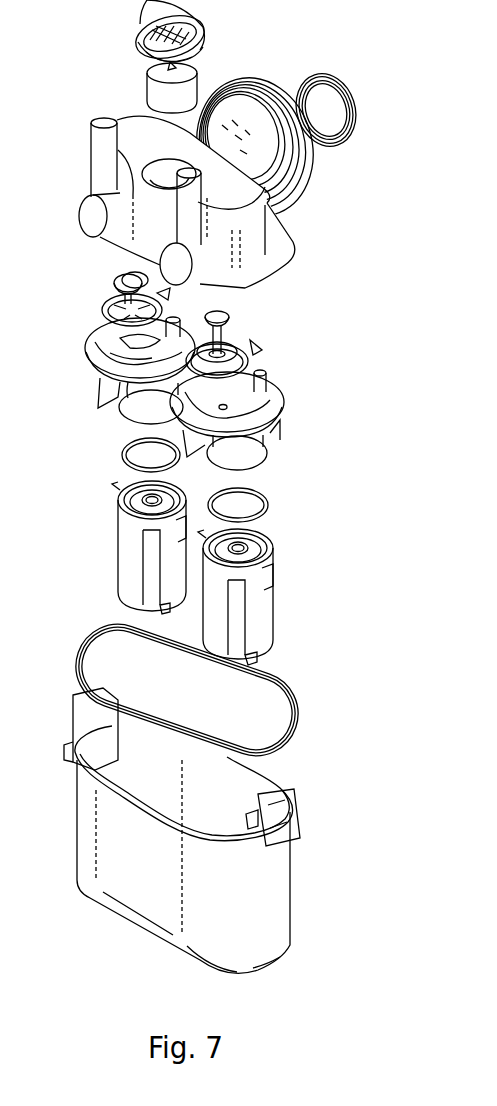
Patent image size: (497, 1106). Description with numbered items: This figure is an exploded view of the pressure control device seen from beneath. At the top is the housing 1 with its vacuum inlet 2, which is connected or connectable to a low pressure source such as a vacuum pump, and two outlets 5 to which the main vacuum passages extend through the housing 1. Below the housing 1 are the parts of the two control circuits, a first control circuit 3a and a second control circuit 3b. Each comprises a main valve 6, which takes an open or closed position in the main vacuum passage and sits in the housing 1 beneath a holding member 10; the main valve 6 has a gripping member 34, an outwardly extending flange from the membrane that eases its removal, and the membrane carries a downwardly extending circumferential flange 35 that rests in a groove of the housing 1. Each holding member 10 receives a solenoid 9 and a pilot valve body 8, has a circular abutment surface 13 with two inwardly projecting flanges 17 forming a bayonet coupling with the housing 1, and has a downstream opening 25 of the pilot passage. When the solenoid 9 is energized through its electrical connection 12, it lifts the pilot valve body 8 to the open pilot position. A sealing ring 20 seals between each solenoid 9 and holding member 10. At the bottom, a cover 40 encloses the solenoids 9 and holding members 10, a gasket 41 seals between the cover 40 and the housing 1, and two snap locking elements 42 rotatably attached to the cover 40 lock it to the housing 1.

The housing 1 is at (257, 242).
The vacuum inlet 2 is at (352, 86).
The first control circuit 3a is at (90, 573).
The second control circuit 3b is at (294, 622).
The outlet 5 is at (100, 160).
The main valve 6 is at (116, 290).
The pilot valve body 8 is at (122, 408).
The solenoid 9 is at (125, 553).
The holding member 10 is at (110, 377).
The electrical connection 12 is at (158, 614).
The circular abutment surface 13 is at (188, 333).
The flange 17 is at (110, 323).
The sealing ring 20 is at (125, 462).
The downstream opening 25 is at (108, 344).
The gripping member 34 is at (152, 266).
The circumferential flange 35 is at (106, 314).
The cover 40 is at (277, 910).
The gasket 41 is at (297, 727).
The snap locking element 42 is at (287, 813).